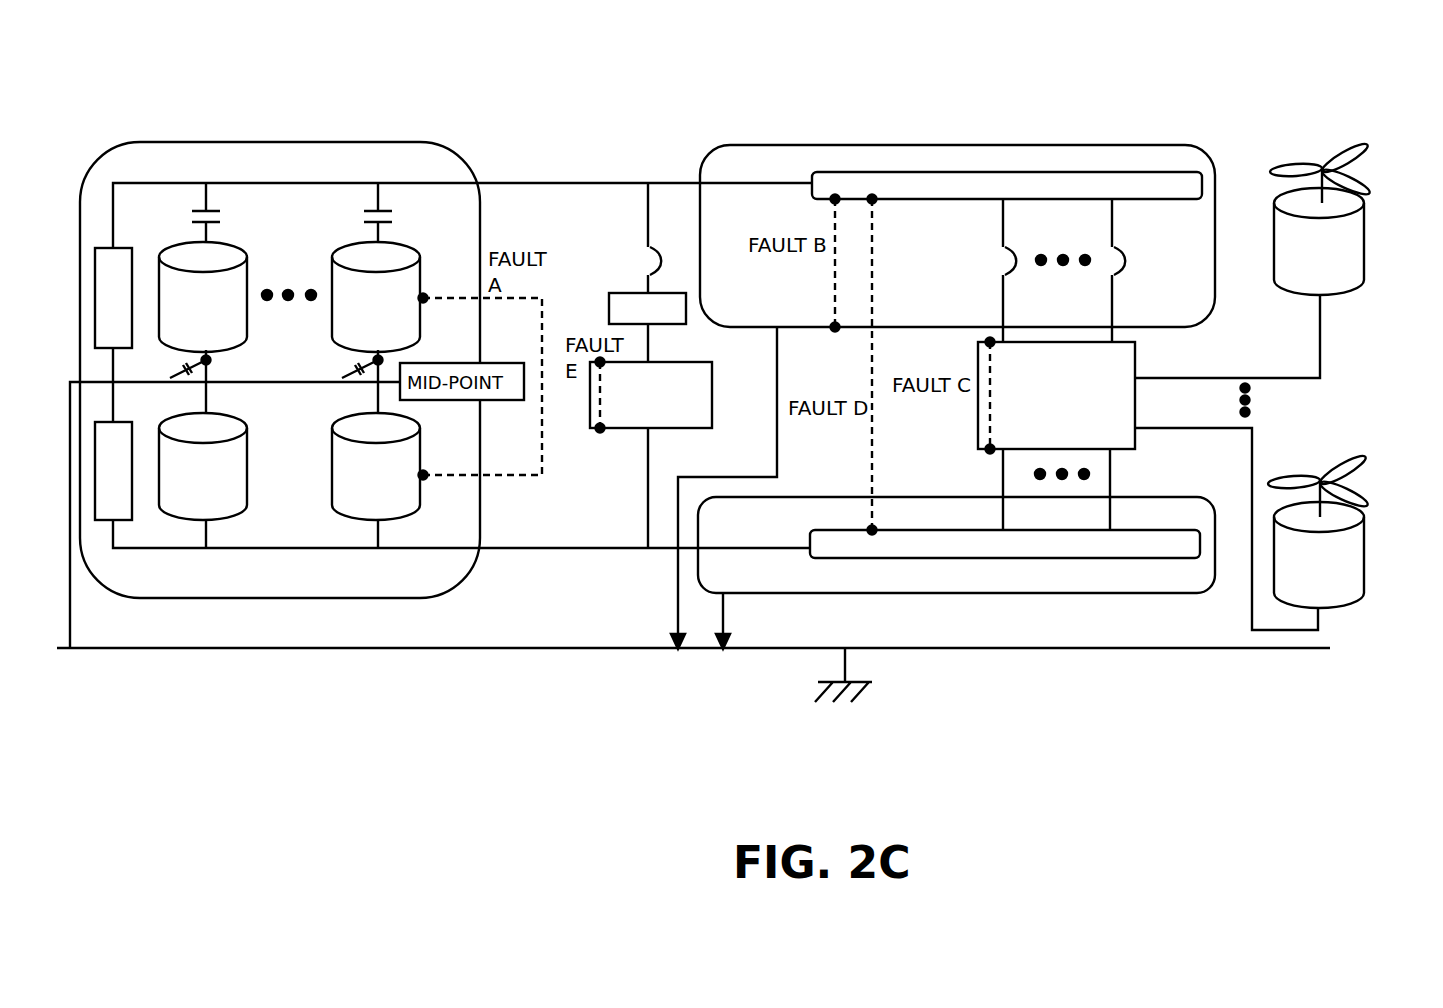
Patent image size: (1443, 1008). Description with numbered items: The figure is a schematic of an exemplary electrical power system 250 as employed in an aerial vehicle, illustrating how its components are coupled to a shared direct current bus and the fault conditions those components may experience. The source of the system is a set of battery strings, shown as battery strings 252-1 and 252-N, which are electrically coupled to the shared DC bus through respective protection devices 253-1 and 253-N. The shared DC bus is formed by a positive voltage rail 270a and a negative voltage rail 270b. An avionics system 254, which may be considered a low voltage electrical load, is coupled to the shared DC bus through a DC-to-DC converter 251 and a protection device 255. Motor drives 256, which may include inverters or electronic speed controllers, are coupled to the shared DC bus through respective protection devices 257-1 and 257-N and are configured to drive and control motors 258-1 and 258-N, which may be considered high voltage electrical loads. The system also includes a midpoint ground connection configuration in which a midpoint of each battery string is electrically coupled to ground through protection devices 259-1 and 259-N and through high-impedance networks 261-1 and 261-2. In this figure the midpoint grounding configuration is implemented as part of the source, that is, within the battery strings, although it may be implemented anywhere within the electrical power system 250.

The electrical power system 250 is at (1243, 74).
The high-impedance network 261-1 is at (103, 247).
The high-impedance network 261-2 is at (105, 520).
The protection device 253-1 is at (223, 217).
The protection device 253-N is at (395, 217).
The battery string 252-1 is at (160, 276).
The battery string 252-N is at (332, 276).
The protection device 259-1 is at (178, 368).
The protection device 259-N is at (350, 368).
The protection device 255 is at (640, 260).
The DC-to-DC converter 251 is at (609, 308).
The avionics system 254 is at (672, 428).
The positive voltage rail 270a is at (838, 172).
The negative voltage rail 270b is at (968, 530).
The protection device 257-1 is at (985, 240).
The protection device 257-N is at (1127, 240).
The motor drives 256 is at (1135, 362).
The motor 258-N is at (1364, 246).
The motor 258-1 is at (1364, 556).